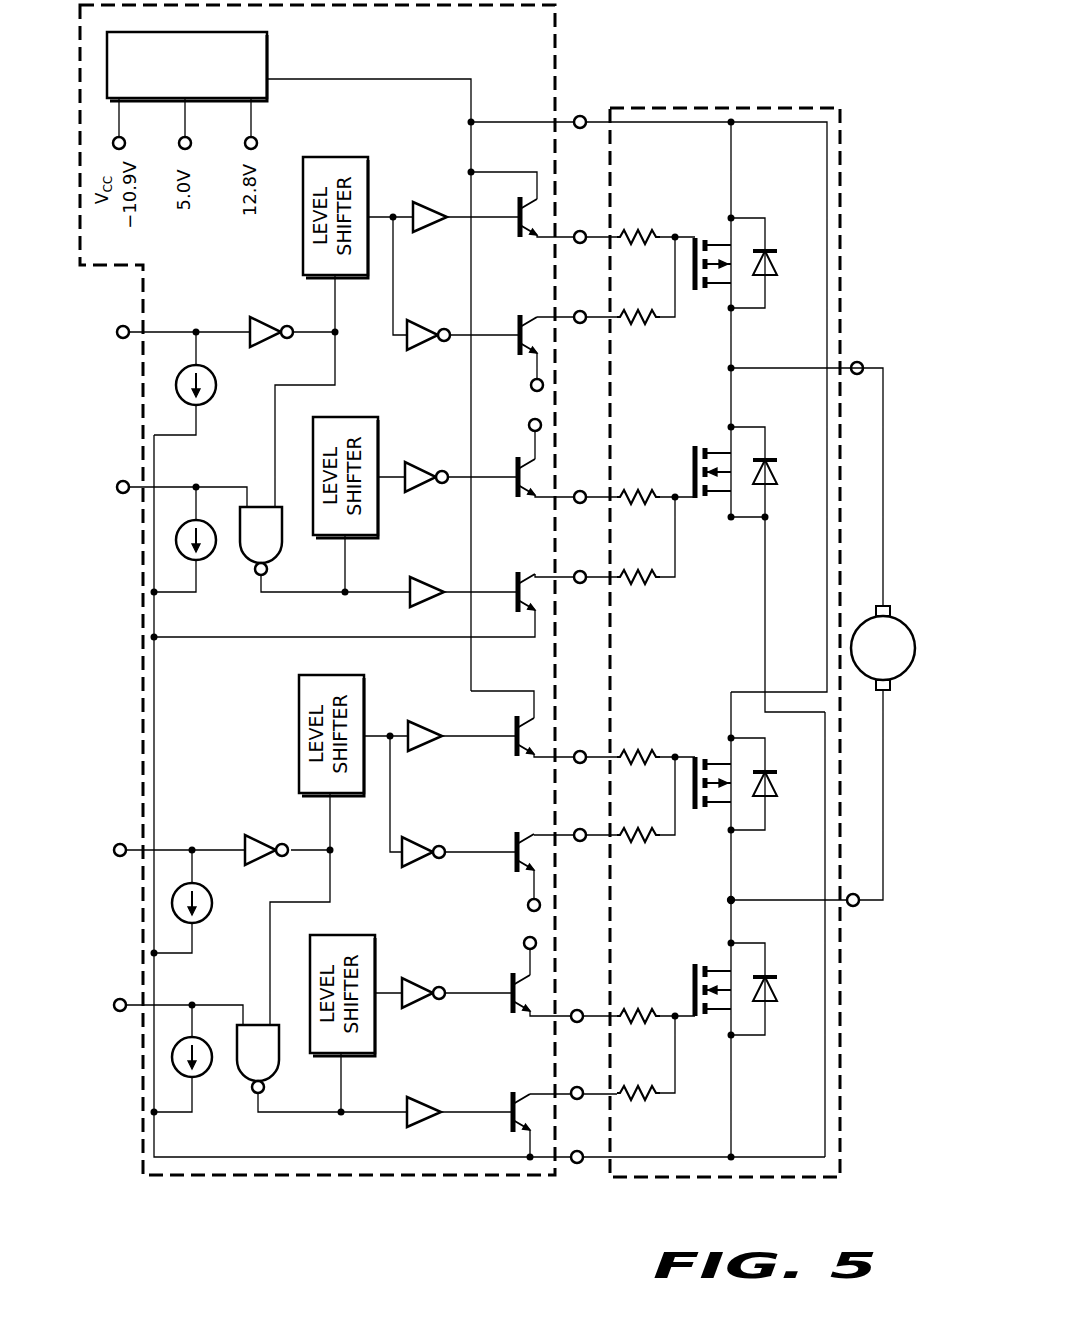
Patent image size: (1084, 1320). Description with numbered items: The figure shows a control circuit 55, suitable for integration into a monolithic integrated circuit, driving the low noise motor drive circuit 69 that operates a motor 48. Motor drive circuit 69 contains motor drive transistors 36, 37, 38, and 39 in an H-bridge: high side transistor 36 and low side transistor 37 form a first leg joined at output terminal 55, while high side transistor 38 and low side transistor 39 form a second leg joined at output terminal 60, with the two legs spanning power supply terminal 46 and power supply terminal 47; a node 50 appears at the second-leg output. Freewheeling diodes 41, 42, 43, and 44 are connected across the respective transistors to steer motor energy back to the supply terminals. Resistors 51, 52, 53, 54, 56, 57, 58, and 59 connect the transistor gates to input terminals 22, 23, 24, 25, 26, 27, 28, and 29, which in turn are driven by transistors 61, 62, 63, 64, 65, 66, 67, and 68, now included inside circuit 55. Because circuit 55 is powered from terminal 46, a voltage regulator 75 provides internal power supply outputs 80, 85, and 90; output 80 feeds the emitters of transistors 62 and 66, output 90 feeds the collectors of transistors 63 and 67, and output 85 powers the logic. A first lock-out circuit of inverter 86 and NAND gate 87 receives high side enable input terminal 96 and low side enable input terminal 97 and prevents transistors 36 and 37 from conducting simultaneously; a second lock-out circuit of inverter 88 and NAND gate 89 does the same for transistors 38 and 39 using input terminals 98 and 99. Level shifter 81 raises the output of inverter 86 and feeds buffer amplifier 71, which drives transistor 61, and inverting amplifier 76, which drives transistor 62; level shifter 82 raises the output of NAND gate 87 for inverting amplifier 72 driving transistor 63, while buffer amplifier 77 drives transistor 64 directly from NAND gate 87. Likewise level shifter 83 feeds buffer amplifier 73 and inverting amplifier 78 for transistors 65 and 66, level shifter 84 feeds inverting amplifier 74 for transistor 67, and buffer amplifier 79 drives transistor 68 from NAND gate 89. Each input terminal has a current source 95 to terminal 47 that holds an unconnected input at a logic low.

The input terminal 22 is at (580, 230).
The input terminal 23 is at (580, 324).
The input terminal 24 is at (580, 490).
The input terminal 25 is at (580, 584).
The input terminal 26 is at (580, 750).
The input terminal 27 is at (580, 842).
The input terminal 28 is at (577, 1009).
The input terminal 29 is at (577, 1100).
The motor drive transistor 36 is at (703, 296).
The motor drive transistor 37 is at (702, 440).
The motor drive transistor 38 is at (700, 814).
The motor drive transistor 39 is at (698, 962).
The freewheeling diode 41 is at (778, 268).
The freewheeling diode 42 is at (778, 478).
The freewheeling diode 43 is at (778, 790).
The freewheeling diode 44 is at (778, 995).
The power supply terminal 46 is at (580, 115).
The power supply terminal 47 is at (577, 1164).
The motor 48 is at (883, 648).
The node 50 is at (735, 898).
The resistor 51 is at (638, 228).
The resistor 52 is at (640, 325).
The resistor 53 is at (638, 488).
The resistor 54 is at (638, 585).
The circuit 55 is at (862, 360).
The resistor 56 is at (638, 748).
The resistor 57 is at (636, 843).
The resistor 58 is at (636, 1007).
The resistor 59 is at (634, 1101).
The output terminal 60 is at (857, 907).
The transistor 61 is at (516, 234).
The transistor 62 is at (516, 324).
The transistor 63 is at (514, 492).
The transistor 64 is at (514, 580).
The transistor 65 is at (512, 750).
The transistor 66 is at (512, 842).
The transistor 67 is at (508, 1007).
The transistor 68 is at (508, 1100).
The motor drive circuit 69 is at (840, 205).
The buffer amplifier 71 is at (432, 228).
The inverting amplifier 72 is at (422, 466).
The buffer amplifier 73 is at (430, 748).
The inverting amplifier 74 is at (418, 982).
The voltage regulator 75 is at (268, 58).
The inverting amplifier 76 is at (426, 345).
The buffer amplifier 77 is at (428, 581).
The inverting amplifier 78 is at (420, 864).
The buffer amplifier 79 is at (426, 1100).
The internal power supply output 80 is at (126, 142).
The level shifter 81 is at (345, 157).
The level shifter 82 is at (362, 417).
The level shifter 83 is at (298, 698).
The level shifter 84 is at (358, 935).
The internal power supply output 85 is at (192, 142).
The inverter 86 is at (246, 318).
The NAND gate 87 is at (278, 560).
The inverter 88 is at (241, 836).
The NAND gate 89 is at (275, 1078).
The internal power supply output 90 is at (258, 142).
The current source 95 is at (208, 398).
The high side switch enable input terminal 96 is at (119, 338).
The low side switch enable input terminal 97 is at (119, 493).
The high side switch enable input terminal 98 is at (116, 856).
The low side switch enable input terminal 99 is at (116, 1011).